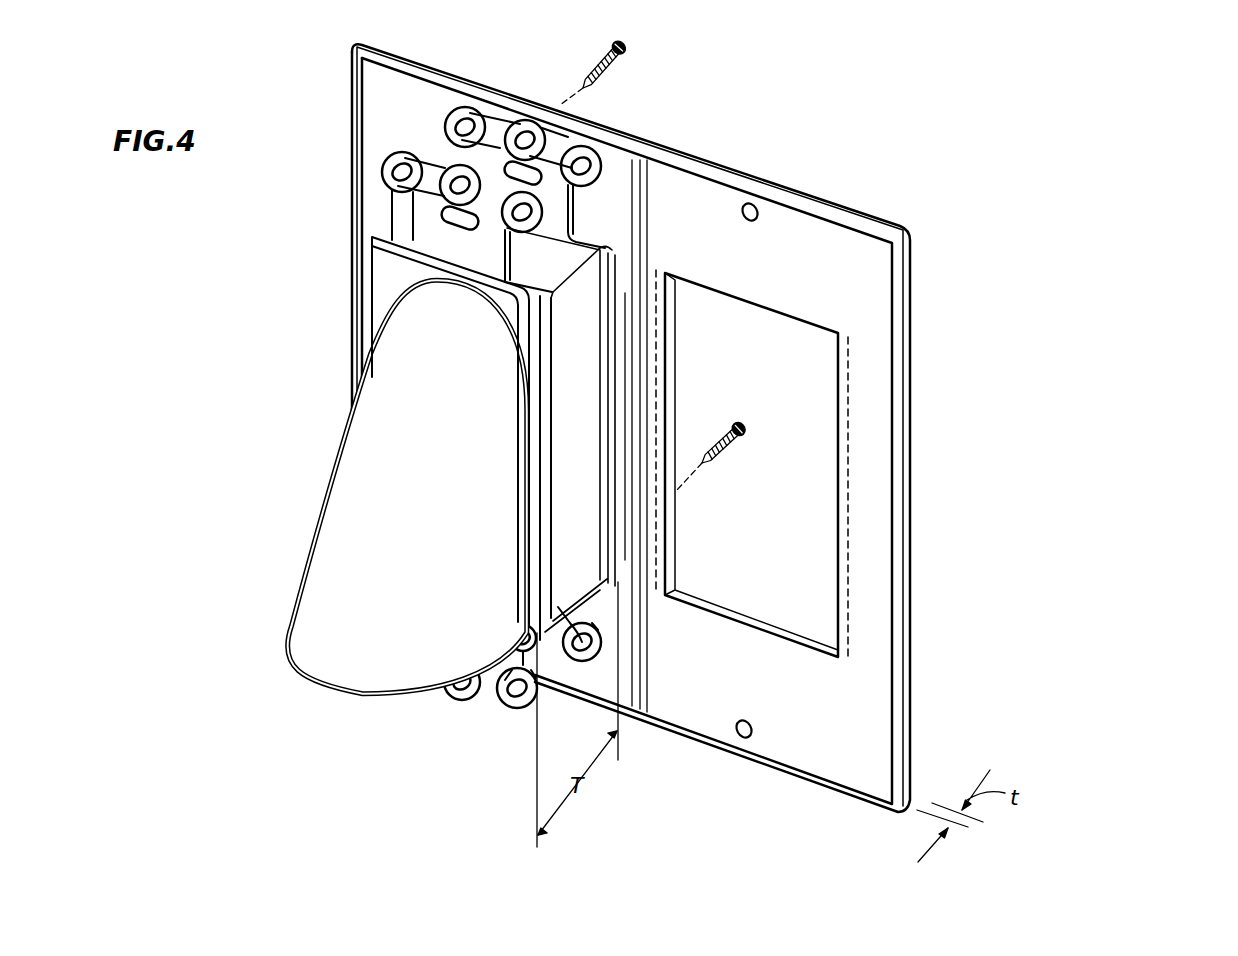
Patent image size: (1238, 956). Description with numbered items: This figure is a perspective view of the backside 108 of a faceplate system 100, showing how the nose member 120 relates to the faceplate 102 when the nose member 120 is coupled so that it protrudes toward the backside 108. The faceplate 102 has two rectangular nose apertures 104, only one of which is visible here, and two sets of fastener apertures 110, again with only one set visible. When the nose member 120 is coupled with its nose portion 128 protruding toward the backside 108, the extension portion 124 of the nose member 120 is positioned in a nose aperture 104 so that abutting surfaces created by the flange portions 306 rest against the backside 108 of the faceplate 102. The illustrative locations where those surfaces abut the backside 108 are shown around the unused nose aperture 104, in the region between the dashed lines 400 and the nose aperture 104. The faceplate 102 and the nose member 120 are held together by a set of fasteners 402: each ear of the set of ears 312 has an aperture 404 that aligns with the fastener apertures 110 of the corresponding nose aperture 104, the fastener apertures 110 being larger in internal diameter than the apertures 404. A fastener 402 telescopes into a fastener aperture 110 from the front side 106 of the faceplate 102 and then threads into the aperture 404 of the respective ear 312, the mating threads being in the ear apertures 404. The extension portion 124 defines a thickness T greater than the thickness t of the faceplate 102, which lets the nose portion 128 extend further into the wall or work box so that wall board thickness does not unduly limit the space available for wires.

The faceplate system 100 is at (1092, 92).
The faceplate 102 is at (913, 230).
The nose aperture 104 is at (798, 558).
The front side 106 is at (915, 353).
The backside 108 is at (708, 257).
The fastener apertures 110 is at (752, 204).
The nose member 120 is at (318, 515).
The extension portion 124 is at (570, 483).
The nose portion 128 is at (418, 605).
The flange portions 306 is at (618, 265).
The set of ears 312 is at (593, 150).
The dashed lines 400 is at (848, 392).
The fasteners 402 is at (635, 40).
The aperture 404 is at (522, 135).